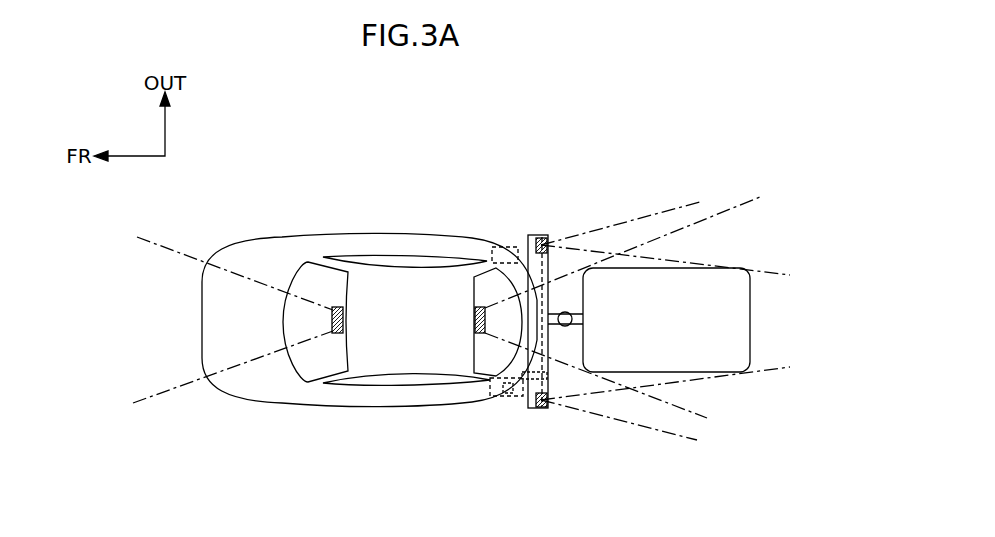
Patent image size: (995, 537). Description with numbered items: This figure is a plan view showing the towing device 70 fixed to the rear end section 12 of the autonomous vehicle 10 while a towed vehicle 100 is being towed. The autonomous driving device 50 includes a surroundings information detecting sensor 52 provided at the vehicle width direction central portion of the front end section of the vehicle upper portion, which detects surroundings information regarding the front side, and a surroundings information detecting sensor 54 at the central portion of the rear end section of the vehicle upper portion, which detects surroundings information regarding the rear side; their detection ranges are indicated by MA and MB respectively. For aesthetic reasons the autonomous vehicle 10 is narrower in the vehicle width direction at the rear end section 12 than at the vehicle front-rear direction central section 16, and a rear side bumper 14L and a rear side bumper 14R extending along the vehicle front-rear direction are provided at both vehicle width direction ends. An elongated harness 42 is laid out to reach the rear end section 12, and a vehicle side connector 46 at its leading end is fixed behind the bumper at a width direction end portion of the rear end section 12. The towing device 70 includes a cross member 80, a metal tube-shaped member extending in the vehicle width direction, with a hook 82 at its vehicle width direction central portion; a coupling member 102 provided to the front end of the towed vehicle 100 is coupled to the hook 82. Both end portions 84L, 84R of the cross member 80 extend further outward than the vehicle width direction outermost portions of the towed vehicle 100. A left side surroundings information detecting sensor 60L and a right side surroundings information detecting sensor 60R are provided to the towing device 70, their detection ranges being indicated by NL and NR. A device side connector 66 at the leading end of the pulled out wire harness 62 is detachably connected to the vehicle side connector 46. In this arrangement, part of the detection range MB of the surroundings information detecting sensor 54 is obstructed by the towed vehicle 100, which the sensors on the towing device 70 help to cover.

The autonomous vehicle 10 is at (251, 402).
The rear end section 12 is at (521, 252).
The rear side bumper 14R is at (497, 247).
The rear side bumper 14L is at (495, 396).
The vehicle front-rear direction central section 16 is at (322, 236).
The elongated harness 42 is at (504, 394).
The vehicle side connector 46 is at (508, 398).
The autonomous driving device 50 is at (376, 230).
The surroundings information detecting sensor 52 is at (343, 316).
The surroundings information detecting sensor 54 is at (474, 319).
The surroundings information detecting sensor 60R is at (549, 237).
The surroundings information detecting sensor 60L is at (549, 408).
The wire harness 62 is at (548, 347).
The device side connector 66 is at (523, 398).
The towing device 70 is at (548, 370).
The cross member 80 is at (549, 380).
The hook 82 is at (558, 329).
The end portion 84R is at (542, 238).
The end portion 84L is at (542, 410).
The towed vehicle 100 is at (752, 322).
The coupling member 102 is at (571, 311).
The detection range MA is at (193, 257).
The detection range MB is at (703, 228).
The detection range NR is at (686, 202).
The detection range NL is at (692, 440).